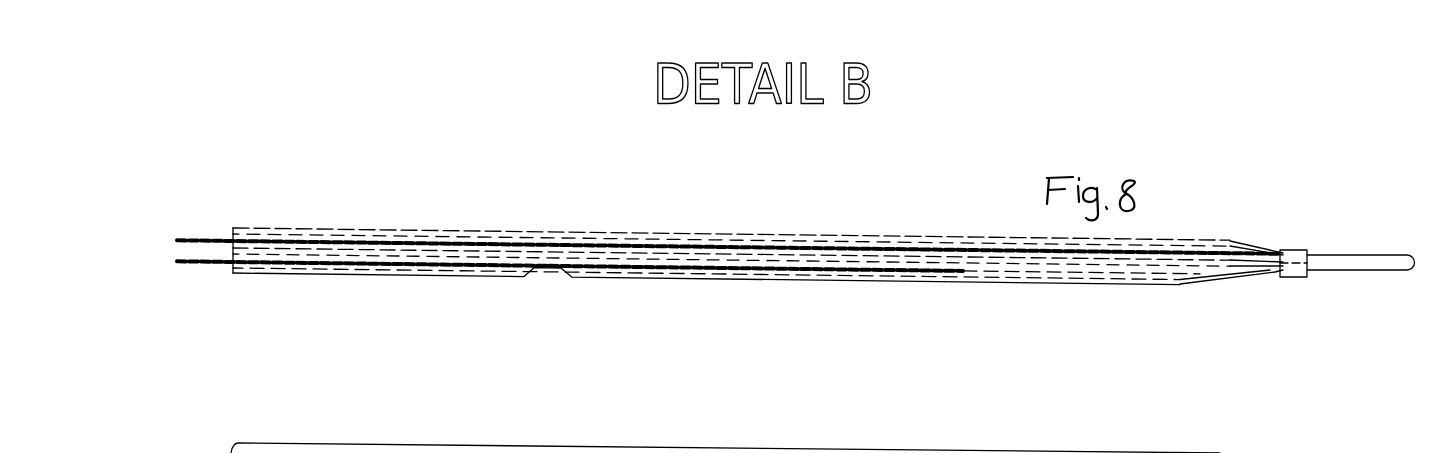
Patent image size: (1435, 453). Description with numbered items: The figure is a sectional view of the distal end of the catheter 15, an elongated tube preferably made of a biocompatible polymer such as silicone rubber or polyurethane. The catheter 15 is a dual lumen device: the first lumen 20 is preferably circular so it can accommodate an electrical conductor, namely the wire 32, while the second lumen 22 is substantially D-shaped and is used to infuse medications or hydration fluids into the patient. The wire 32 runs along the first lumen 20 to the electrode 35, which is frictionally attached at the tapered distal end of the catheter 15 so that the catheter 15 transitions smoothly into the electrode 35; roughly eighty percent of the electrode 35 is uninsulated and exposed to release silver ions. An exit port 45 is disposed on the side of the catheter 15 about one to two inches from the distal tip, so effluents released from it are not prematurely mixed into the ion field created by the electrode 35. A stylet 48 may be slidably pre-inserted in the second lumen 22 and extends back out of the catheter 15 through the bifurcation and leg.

The catheter 15 is at (863, 278).
The first lumen 20 is at (233, 237).
The second lumen 22 is at (233, 265).
The wire 32 is at (692, 242).
The electrode 35 is at (1371, 255).
The exit port 45 is at (553, 452).
The stylet 48 is at (365, 265).